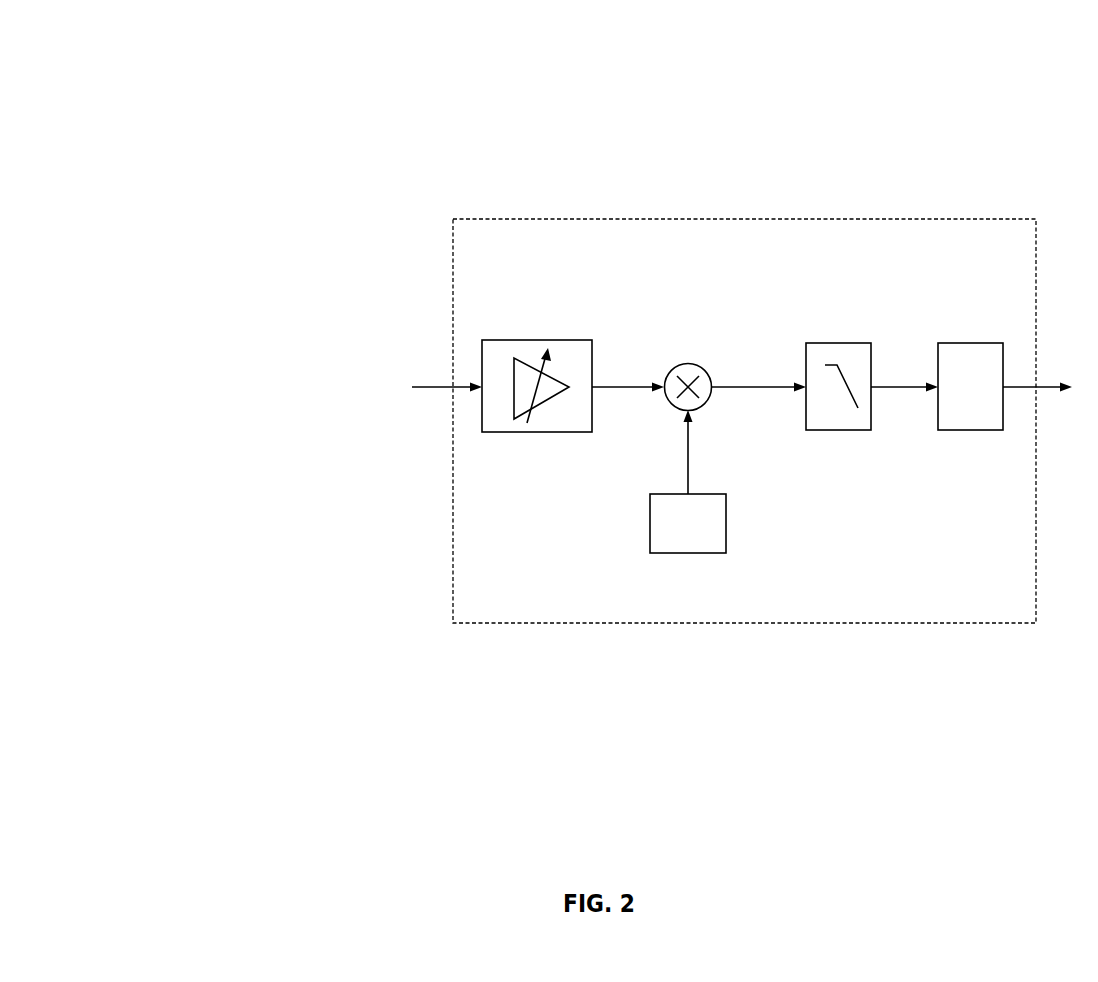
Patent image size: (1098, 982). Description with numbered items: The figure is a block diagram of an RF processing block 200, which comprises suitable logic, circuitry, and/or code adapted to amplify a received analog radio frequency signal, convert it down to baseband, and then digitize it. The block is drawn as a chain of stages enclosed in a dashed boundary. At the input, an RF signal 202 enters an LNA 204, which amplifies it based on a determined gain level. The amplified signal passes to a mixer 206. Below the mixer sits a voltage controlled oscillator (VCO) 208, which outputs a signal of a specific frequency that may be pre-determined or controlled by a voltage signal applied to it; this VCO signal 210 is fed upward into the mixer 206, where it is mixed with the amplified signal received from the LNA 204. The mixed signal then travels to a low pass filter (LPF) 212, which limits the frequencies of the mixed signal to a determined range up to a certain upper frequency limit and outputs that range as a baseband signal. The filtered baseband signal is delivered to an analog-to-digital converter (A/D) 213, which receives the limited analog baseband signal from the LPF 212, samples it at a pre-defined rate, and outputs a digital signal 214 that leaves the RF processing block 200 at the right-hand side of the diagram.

The RF processing block 200 is at (156, 90).
The RF signal 202 is at (430, 385).
The LNA 204 is at (570, 340).
The mixer 206 is at (692, 360).
The voltage controlled oscillator 208 is at (702, 553).
The VCO signal 210 is at (687, 457).
The low pass filter 212 is at (836, 343).
The analog-to-digital converter 213 is at (976, 343).
The digital signal 214 is at (1052, 386).